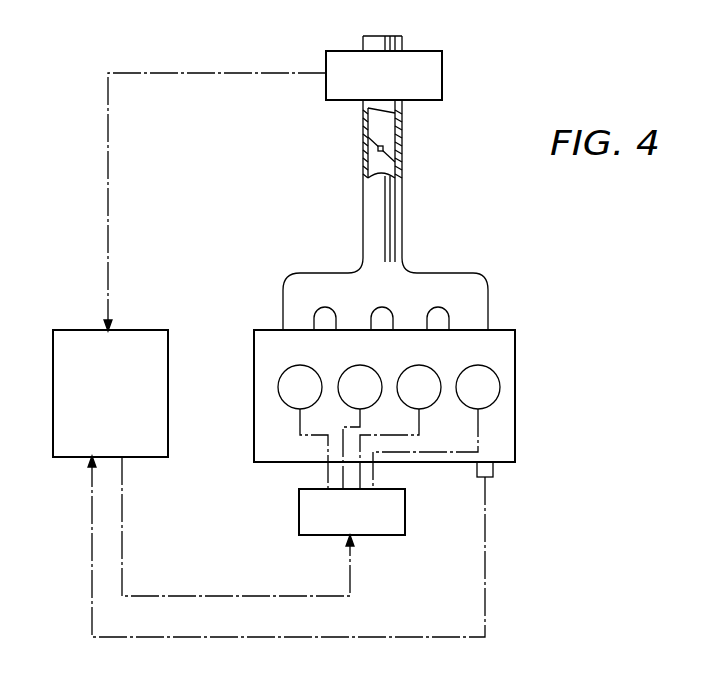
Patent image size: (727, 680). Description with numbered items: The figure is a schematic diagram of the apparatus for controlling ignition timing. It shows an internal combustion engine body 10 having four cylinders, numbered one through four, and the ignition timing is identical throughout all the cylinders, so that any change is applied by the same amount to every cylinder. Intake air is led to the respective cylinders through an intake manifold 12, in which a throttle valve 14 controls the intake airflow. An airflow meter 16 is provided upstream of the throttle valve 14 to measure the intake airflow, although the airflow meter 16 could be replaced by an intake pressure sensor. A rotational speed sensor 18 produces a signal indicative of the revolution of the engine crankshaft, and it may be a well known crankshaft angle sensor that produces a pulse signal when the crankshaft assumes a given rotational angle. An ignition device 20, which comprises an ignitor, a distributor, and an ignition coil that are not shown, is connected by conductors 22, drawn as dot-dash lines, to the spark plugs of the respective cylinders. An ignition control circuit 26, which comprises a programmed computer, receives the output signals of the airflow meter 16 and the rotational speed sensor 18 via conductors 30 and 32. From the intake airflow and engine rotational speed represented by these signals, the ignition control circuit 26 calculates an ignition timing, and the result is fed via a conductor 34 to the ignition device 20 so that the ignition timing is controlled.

The internal combustion engine body 10 is at (515, 398).
The intake manifold 12 is at (402, 212).
The throttle valve 14 is at (384, 151).
The airflow meter 16 is at (442, 74).
The rotational speed sensor 18 is at (493, 468).
The ignition device 20 is at (405, 510).
The conductors 22 is at (328, 468).
The ignition control circuit 26 is at (168, 352).
The conductor 30 is at (110, 193).
The conductor 32 is at (92, 522).
The conductor 34 is at (122, 520).